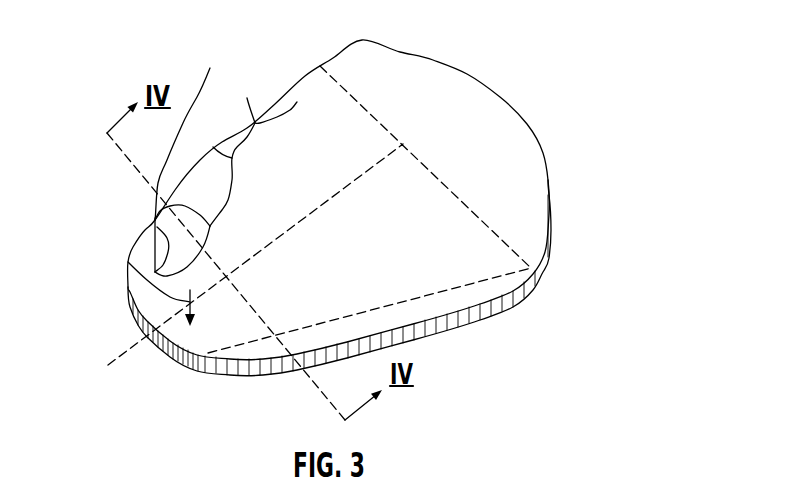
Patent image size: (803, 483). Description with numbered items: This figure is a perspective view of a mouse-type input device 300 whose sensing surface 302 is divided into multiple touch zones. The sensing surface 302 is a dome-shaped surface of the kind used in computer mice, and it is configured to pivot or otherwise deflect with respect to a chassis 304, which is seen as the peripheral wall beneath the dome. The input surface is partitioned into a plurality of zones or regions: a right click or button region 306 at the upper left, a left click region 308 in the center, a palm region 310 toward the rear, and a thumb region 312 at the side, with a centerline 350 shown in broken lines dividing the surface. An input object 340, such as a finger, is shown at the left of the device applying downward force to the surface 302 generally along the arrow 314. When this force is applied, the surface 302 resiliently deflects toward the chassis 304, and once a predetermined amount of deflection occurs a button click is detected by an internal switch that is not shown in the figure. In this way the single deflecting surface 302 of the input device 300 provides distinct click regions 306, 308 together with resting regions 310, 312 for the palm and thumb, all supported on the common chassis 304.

The input device 300 is at (638, 18).
The sensing surface 302 is at (356, 45).
The chassis 304 is at (515, 308).
The right click region 306 is at (290, 197).
The left click region 308 is at (381, 268).
The palm region 310 is at (483, 147).
The thumb region 312 is at (507, 286).
The arrow 314 is at (129, 263).
The input object 340 is at (205, 78).
The centerline 350 is at (120, 356).